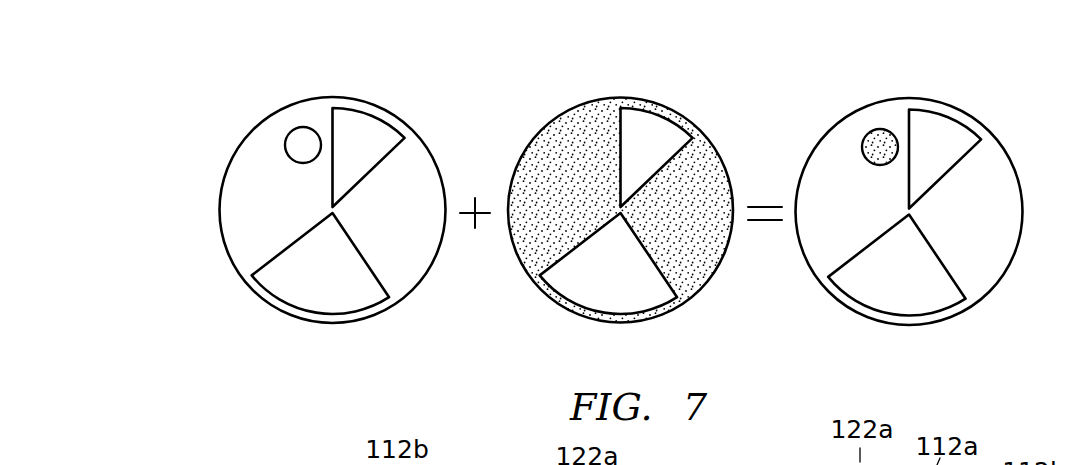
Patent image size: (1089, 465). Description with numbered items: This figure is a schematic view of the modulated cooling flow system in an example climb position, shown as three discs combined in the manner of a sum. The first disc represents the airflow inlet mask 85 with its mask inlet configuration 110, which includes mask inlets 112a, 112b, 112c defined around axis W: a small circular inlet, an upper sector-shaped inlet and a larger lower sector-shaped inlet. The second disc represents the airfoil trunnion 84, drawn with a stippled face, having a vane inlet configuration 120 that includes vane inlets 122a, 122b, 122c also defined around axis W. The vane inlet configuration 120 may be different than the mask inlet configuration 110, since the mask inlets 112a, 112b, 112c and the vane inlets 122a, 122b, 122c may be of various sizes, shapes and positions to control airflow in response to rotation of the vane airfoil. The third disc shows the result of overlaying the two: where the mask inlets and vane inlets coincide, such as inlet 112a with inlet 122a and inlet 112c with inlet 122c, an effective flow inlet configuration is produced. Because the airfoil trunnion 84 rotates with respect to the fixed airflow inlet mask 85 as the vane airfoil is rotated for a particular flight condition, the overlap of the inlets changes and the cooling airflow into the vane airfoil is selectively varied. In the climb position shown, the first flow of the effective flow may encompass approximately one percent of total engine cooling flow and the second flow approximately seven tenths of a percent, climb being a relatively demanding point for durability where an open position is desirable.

The airflow inlet mask 85 is at (313, 98).
The mask inlet configuration 110 is at (520, 186).
The mask inlet 112a is at (297, 145).
The mask inlet 112b is at (363, 133).
The mask inlet 112c is at (297, 288).
The airfoil trunnion 84 is at (680, 110).
The vane inlet configuration 120 is at (755, 189).
The vane inlet 122a is at (637, 123).
The vane inlet 122b is at (570, 283).
The vane inlet 122c is at (858, 283).